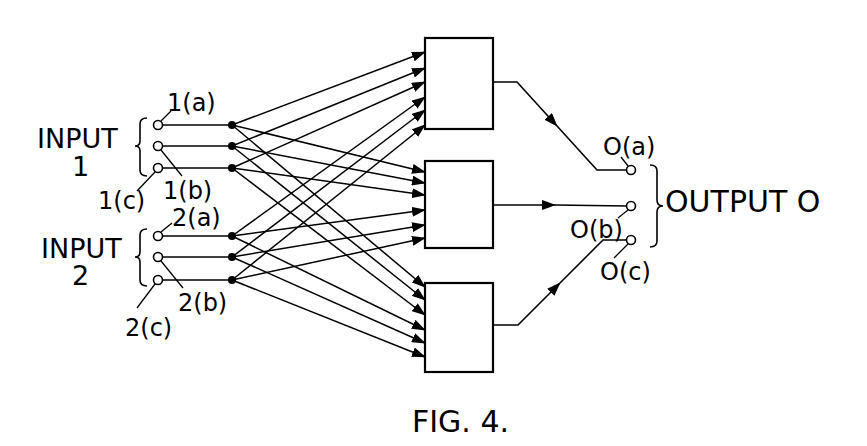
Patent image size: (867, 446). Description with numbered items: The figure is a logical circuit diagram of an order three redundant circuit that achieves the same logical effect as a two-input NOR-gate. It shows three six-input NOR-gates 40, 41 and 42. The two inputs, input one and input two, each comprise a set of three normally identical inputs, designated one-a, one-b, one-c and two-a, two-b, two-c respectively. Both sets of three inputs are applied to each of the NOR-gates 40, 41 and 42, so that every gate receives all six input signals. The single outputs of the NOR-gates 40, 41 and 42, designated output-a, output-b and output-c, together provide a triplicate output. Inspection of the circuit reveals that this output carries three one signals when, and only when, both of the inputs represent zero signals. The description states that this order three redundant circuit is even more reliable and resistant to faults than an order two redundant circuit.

The six-input NOR-gate 40 is at (491, 40).
The six-input NOR-gate 41 is at (491, 163).
The six-input NOR-gate 42 is at (491, 285).